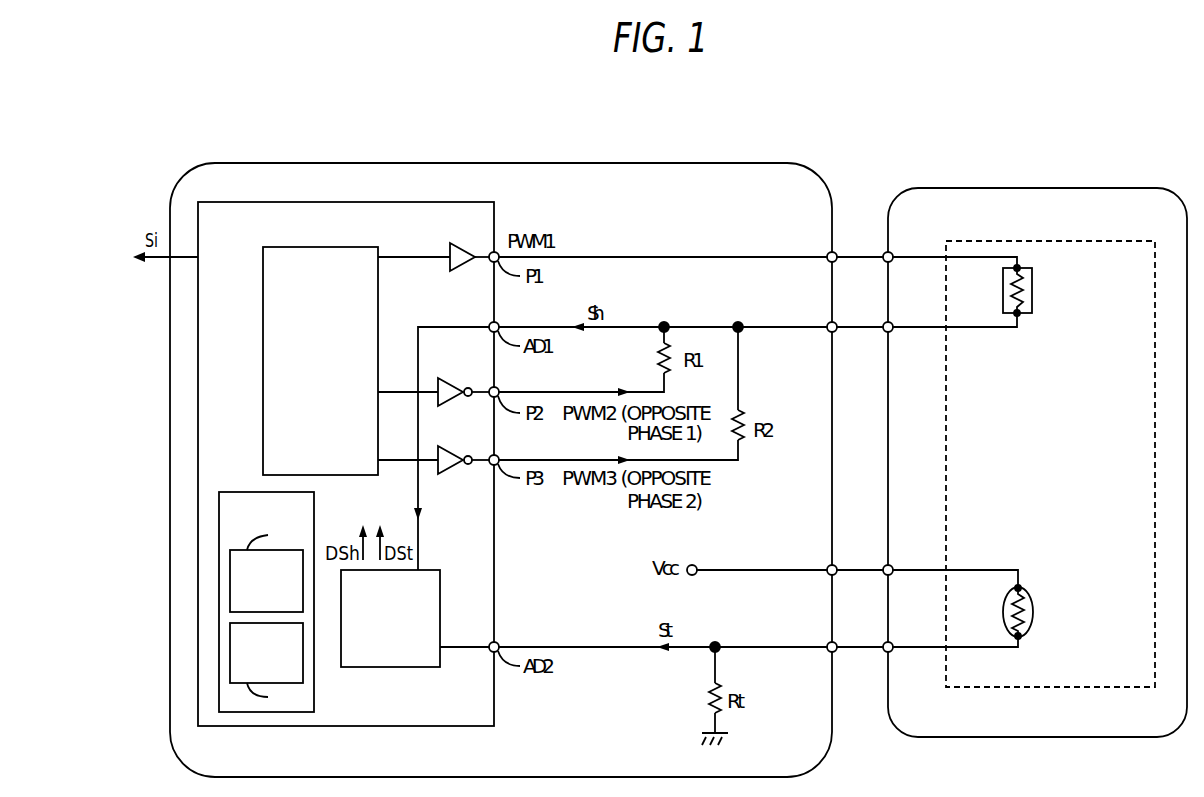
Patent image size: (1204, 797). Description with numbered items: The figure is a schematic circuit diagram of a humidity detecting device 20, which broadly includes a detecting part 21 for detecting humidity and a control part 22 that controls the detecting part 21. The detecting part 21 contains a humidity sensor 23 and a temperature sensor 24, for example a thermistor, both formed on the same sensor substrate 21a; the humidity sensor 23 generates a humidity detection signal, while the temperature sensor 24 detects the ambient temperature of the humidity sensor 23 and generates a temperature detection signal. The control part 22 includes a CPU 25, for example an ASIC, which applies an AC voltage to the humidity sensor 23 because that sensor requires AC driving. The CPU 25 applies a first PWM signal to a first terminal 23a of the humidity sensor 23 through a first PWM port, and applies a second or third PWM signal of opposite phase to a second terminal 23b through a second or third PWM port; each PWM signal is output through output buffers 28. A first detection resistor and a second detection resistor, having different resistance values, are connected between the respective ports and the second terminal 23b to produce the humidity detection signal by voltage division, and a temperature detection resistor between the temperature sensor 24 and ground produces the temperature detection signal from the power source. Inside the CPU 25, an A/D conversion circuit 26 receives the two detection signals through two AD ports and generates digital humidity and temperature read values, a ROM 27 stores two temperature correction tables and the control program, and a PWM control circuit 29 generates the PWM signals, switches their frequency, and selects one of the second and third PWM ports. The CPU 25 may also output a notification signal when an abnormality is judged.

The humidity detecting device 20 is at (900, 155).
The detecting part 21 is at (1079, 187).
The sensor substrate 21a is at (1102, 240).
The control part 22 is at (745, 163).
The humidity sensor 23 is at (1032, 292).
The first terminal 23a is at (1019, 267).
The second terminal 23b is at (1019, 314).
The temperature sensor 24 is at (1033, 612).
The CPU 25 is at (285, 202).
The A/D conversion circuit 26 is at (440, 599).
The ROM 27 is at (245, 490).
The output buffers 28 is at (462, 265).
The PWM control circuit 29 is at (263, 294).